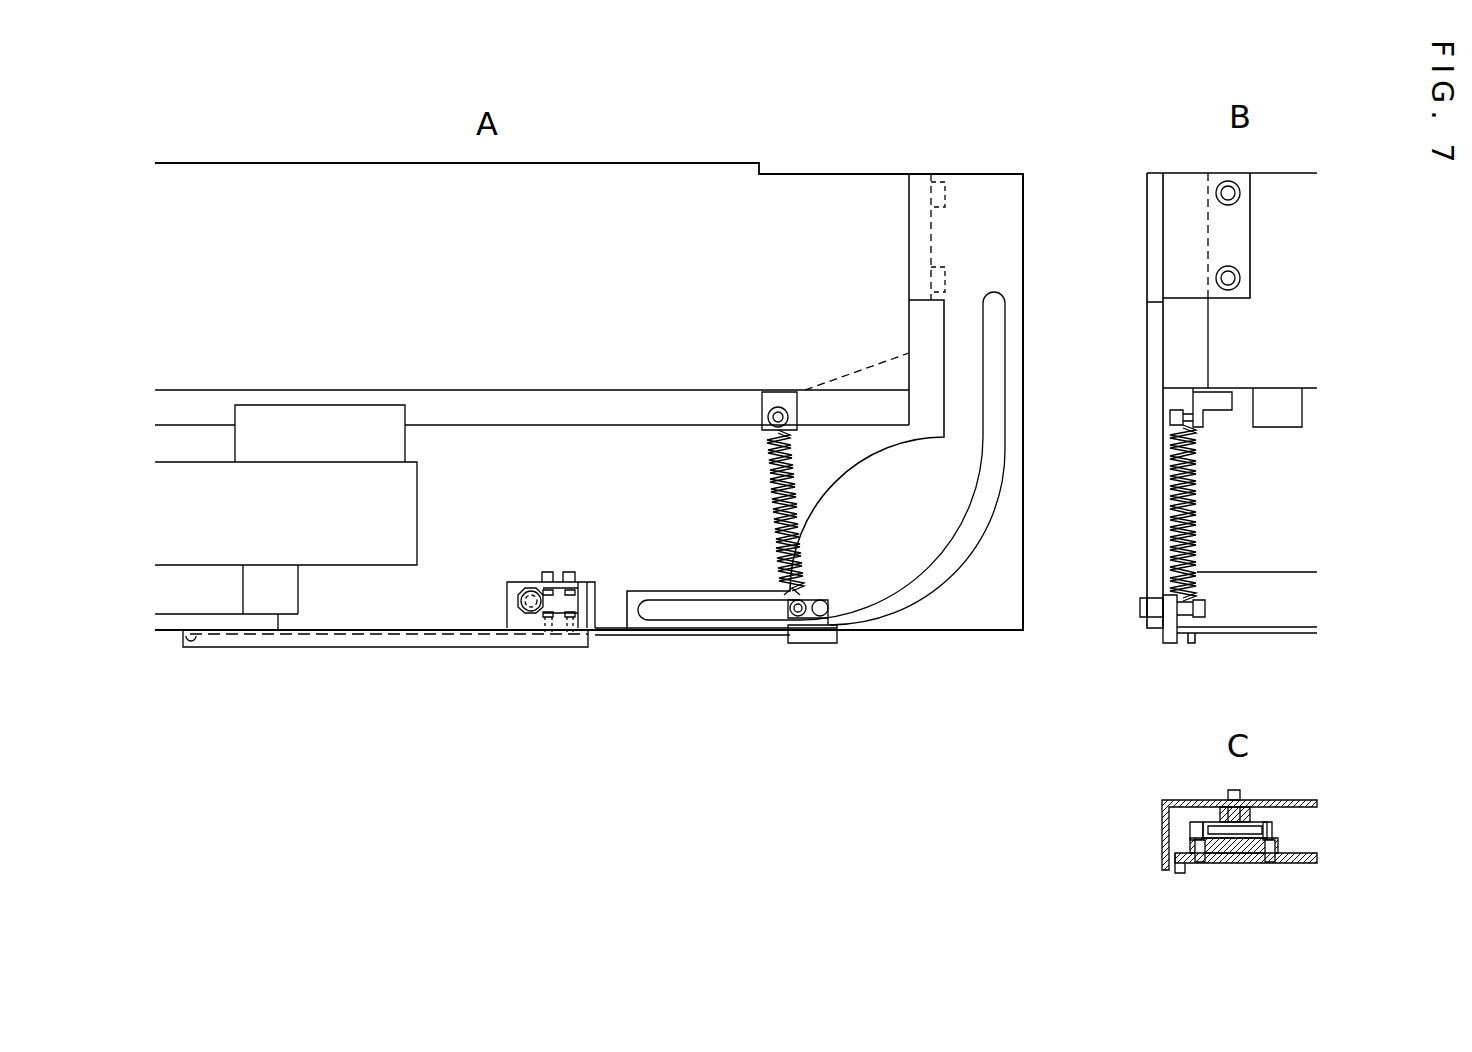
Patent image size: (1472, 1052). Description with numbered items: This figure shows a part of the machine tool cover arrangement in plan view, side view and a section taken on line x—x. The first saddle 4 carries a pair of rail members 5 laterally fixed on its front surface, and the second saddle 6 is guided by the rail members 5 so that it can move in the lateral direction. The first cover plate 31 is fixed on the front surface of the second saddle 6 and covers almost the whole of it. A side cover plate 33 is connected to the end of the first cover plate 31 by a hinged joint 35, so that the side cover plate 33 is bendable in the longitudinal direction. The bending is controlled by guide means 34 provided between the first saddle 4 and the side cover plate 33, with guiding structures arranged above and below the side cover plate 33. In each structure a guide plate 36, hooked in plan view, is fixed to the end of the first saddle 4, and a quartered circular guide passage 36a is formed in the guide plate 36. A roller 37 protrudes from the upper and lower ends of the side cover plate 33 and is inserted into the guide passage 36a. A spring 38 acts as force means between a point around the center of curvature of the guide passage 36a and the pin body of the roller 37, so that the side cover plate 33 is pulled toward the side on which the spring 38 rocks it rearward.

In FIG. 7A, the first saddle 4 is at (622, 362).
In FIG. 7B, the first saddle 4 is at (1288, 330).
In FIG. 7A, the rail members 5 is at (517, 410).
In FIG. 7B, the rail members 5 is at (1281, 427).
In FIG. 7A, the second saddle 6 is at (418, 515).
In FIG. 7A, the first cover plate 31 is at (398, 648).
In FIG. 7C, the first cover plate 31 is at (1300, 798).
In FIG. 7A, the side cover plate 33 is at (612, 633).
In FIG. 7B, the side cover plate 33 is at (1275, 617).
In FIG. 7C, the side cover plate 33 is at (1297, 866).
In FIG. 7A, the guide means 34 is at (947, 611).
In FIG. 7A, the hinged joint 35 is at (528, 580).
In FIG. 7C, the hinged joint 35 is at (1200, 828).
In FIG. 7A, the guide plate 36 is at (820, 402).
In FIG. 7B, the guide plate 36 is at (1147, 512).
In FIG. 7A, the guide passage 36a is at (960, 540).
In FIG. 7A, the roller 37 is at (820, 615).
In FIG. 7B, the roller 37 is at (1140, 612).
In FIG. 7A, the spring 38 is at (772, 507).
In FIG. 7B, the spring 38 is at (1197, 546).